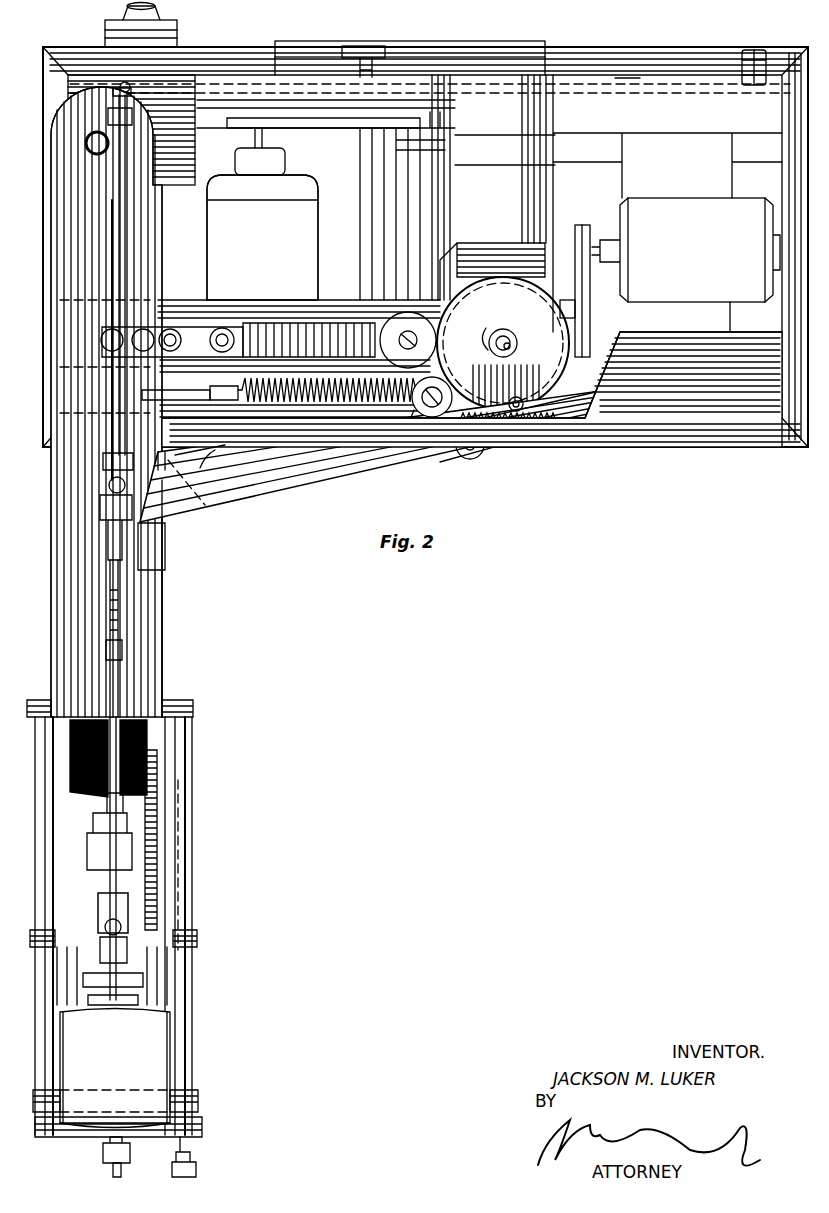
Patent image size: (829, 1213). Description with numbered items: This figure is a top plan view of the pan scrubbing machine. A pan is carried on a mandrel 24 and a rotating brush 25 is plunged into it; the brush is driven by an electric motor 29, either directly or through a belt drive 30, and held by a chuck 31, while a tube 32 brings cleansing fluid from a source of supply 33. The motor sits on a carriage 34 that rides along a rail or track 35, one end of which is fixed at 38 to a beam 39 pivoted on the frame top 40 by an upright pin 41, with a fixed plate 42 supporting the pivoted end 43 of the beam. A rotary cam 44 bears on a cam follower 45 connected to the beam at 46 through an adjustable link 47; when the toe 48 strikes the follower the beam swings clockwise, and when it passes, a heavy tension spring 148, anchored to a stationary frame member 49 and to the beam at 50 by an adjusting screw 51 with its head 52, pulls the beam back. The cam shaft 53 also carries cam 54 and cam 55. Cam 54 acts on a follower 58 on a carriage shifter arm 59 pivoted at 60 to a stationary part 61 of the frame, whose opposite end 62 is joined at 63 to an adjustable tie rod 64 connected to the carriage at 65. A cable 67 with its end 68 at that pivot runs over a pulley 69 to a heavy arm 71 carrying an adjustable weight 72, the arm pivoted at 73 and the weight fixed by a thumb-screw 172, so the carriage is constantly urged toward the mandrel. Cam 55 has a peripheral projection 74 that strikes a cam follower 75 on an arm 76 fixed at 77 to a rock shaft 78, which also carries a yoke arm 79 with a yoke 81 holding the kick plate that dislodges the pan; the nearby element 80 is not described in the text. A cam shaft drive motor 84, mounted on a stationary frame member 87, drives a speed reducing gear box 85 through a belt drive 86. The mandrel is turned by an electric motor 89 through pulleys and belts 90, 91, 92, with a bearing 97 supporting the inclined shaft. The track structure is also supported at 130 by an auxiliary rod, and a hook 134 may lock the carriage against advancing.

The mandrel 24 is at (165, 552).
The rotating brush 25 is at (150, 740).
The electric motor 29 is at (160, 1043).
The belt drive 30 is at (127, 968).
The chuck 31 is at (92, 855).
The tube 32 is at (192, 823).
The source of supply 33 is at (196, 1167).
The carriage 34 is at (150, 985).
The rail or track 35 is at (186, 784).
The fixed support end of rail 38 is at (44, 693).
The beam 39 is at (150, 618).
The frame top 40 is at (62, 70).
The upright pin or bolt 41 is at (88, 135).
The fixed plate 42 is at (172, 182).
The pivoted end of beam 43 is at (145, 200).
The rotary cam 44 is at (474, 300).
The cam follower 45 is at (400, 325).
The beam connection 46 is at (163, 320).
The adjustable link 47 is at (228, 328).
The high point or toe of cam 48 is at (582, 342).
The stationary frame member 49 is at (432, 228).
The spring connection to beam 50 is at (210, 402).
The adjusting screw 51 is at (208, 388).
The screw head 52 is at (280, 450).
The cam shaft 53 is at (508, 335).
The cam 54 is at (492, 335).
The rotary cam 55 is at (500, 277).
The follower 58 is at (555, 420).
The carriage shifter arm 59 is at (240, 480).
The pivot 60 is at (610, 415).
The stationary part of frame 61 is at (688, 400).
The opposite end of shifter arm 62 is at (109, 487).
The pivotal connection 63 is at (100, 510).
The adjustable tie rod 64 is at (118, 672).
The pivotal connection to carriage 65 is at (118, 920).
The cable 67 is at (114, 246).
The cable end 68 is at (103, 462).
The pulley 69 is at (110, 88).
The heavy arm 71 is at (618, 75).
The adjustable weight 72 is at (488, 42).
The pivot of weighted arm 73 is at (754, 50).
The peripheral projection 74 is at (540, 372).
The cam follower 75 is at (418, 410).
The arm 76 is at (432, 432).
The arm fixing point 77 is at (465, 460).
The rock shaft 78 is at (482, 457).
The yoke arm 79 is at (247, 465).
The hidden link 80 is at (212, 490).
The yoke 81 is at (170, 480).
The cam shaft drive motor 84 is at (678, 205).
The speed reducing gear box 85 is at (575, 270).
The belt drive 86 is at (590, 303).
The stationary frame member 87 is at (600, 148).
The electric motor 89 is at (305, 228).
The pulley and belt 90 is at (285, 128).
The pulley and belt 91 is at (328, 118).
The pulley and belt 92 is at (352, 130).
The bearing 97 is at (162, 16).
The connection 130 is at (103, 1148).
The hook 134 is at (113, 1170).
The heavy tension spring 148 is at (260, 323).
The thumb-screw 172 is at (370, 46).